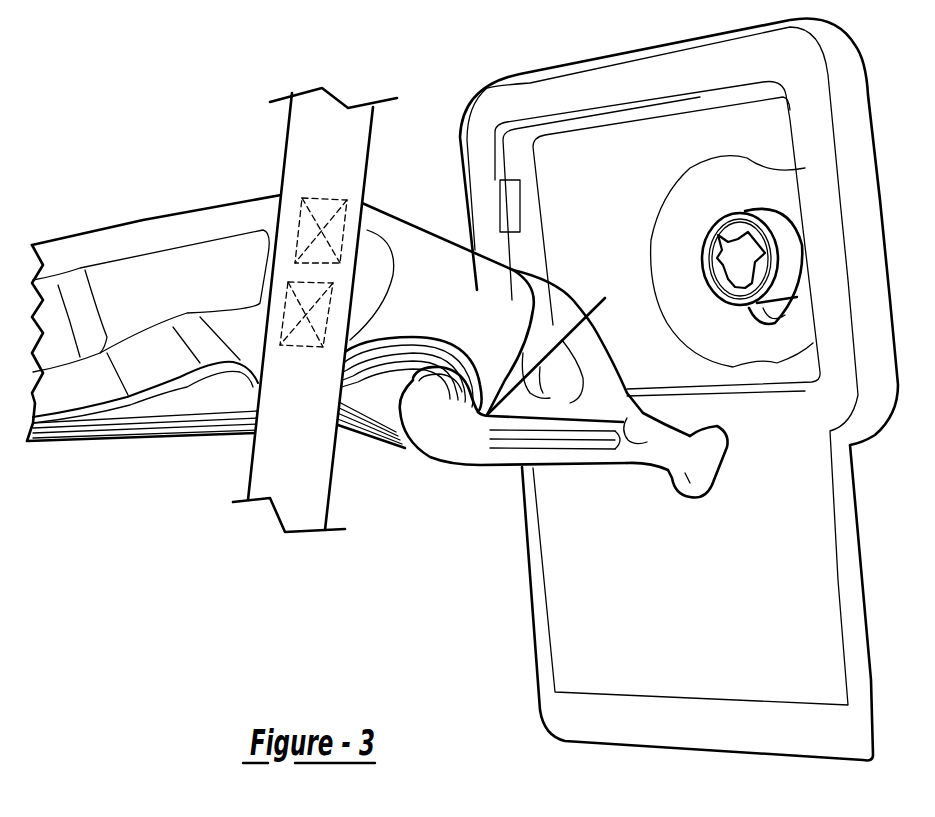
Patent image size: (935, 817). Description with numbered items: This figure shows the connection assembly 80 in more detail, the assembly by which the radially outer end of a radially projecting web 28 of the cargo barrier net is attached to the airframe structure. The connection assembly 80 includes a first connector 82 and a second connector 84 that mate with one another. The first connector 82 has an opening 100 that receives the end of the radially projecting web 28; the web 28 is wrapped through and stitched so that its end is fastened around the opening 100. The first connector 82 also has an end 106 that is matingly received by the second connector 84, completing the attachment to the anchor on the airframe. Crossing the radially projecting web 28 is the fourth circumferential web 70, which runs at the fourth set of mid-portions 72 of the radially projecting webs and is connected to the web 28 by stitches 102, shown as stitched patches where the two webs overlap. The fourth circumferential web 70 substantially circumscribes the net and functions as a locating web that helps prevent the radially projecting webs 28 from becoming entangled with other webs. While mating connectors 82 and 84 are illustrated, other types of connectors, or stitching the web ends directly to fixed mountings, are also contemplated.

The radially projecting web 28 is at (143, 220).
The fourth circumferential web 70 is at (373, 130).
The fourth set of mid-portions 72 is at (263, 168).
The connection assembly 80 is at (779, 460).
The first connector 82 is at (470, 470).
The second connector 84 is at (717, 220).
The opening 100 is at (563, 340).
The stitches 102 is at (325, 198).
The end 106 is at (687, 483).